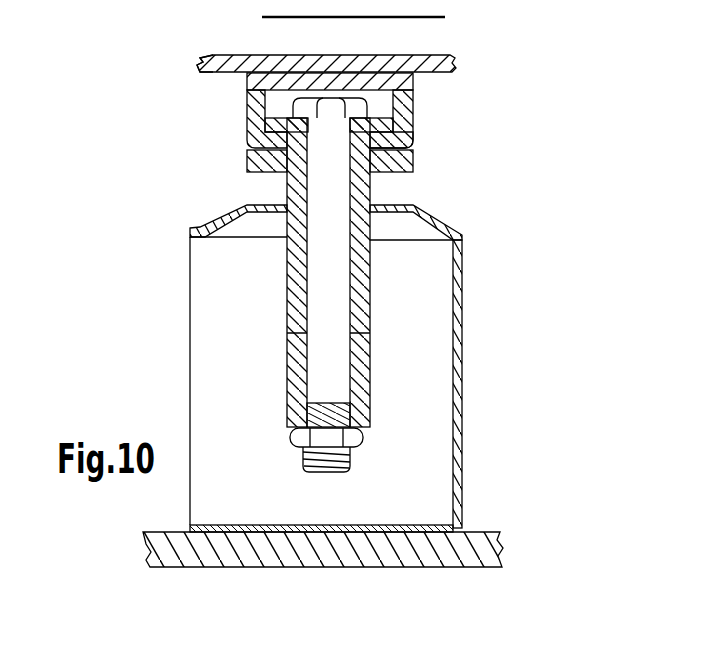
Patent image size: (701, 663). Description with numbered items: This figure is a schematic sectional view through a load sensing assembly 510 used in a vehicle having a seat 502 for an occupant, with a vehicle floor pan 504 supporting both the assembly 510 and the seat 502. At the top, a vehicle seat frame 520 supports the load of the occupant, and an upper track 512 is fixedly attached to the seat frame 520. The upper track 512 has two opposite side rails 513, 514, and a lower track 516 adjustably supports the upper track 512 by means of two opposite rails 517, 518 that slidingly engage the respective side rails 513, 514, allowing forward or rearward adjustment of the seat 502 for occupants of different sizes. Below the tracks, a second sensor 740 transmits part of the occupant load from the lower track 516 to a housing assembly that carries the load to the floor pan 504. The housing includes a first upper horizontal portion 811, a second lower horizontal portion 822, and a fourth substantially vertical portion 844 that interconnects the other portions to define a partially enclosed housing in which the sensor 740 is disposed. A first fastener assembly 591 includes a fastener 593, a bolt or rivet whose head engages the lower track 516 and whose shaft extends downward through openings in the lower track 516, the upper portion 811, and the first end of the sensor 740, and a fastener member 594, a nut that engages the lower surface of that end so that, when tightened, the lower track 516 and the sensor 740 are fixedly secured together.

The seat 502 is at (417, 40).
The vehicle floor pan 504 is at (440, 553).
The load sensing assembly 510 is at (98, 265).
The upper track 512 is at (420, 82).
The side rail 513 is at (266, 114).
The side rail 514 is at (413, 108).
The lower track 516 is at (420, 177).
The rail 517 is at (247, 158).
The rail 518 is at (413, 158).
The vehicle seat frame 520 is at (205, 56).
The first fastener assembly 591 is at (372, 438).
The fastener 593 is at (247, 92).
The fastener member 594 is at (323, 440).
The second sensor 740 is at (400, 292).
The first upper horizontal portion 811 is at (240, 202).
The second lower horizontal portion 822 is at (248, 525).
The fourth substantially vertical portion 844 is at (468, 332).